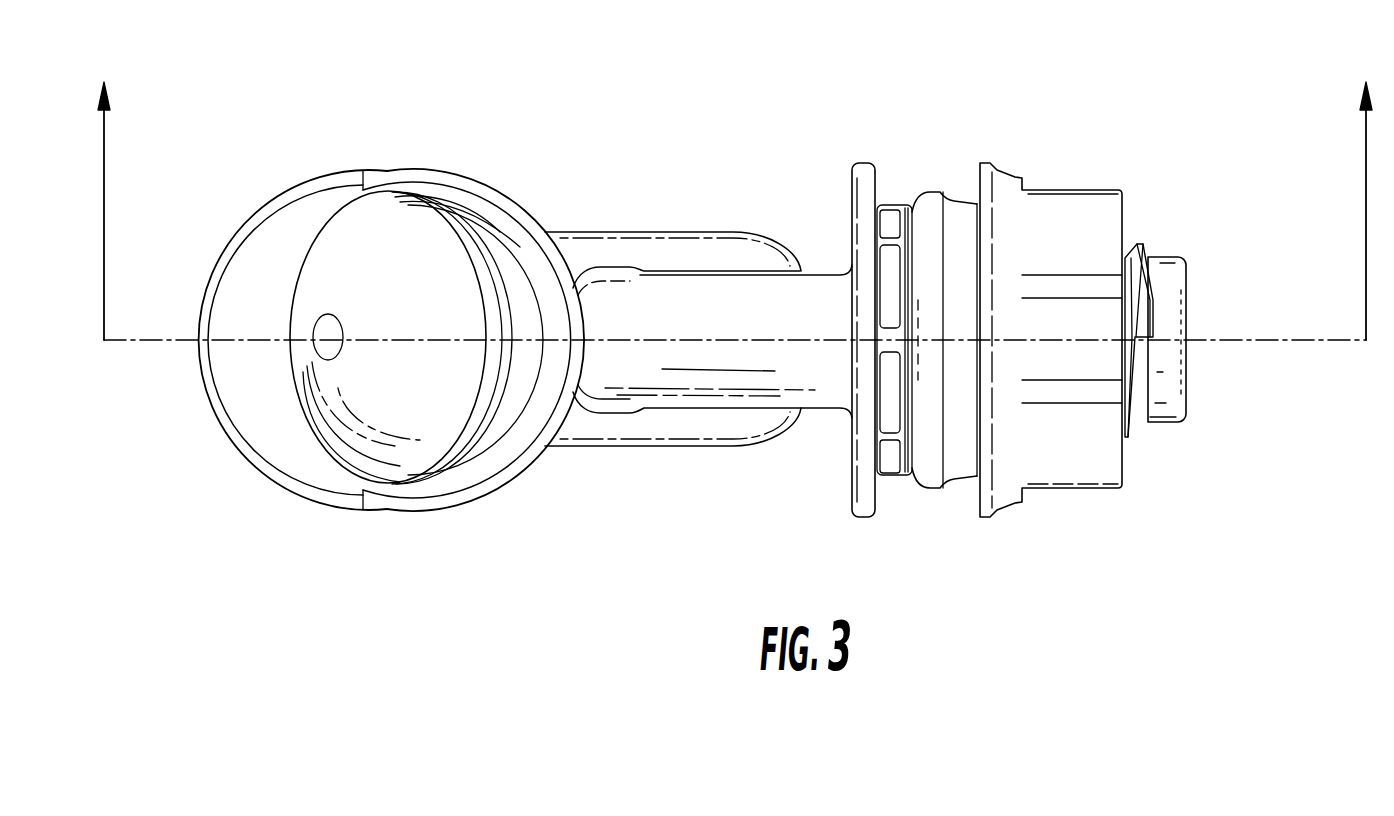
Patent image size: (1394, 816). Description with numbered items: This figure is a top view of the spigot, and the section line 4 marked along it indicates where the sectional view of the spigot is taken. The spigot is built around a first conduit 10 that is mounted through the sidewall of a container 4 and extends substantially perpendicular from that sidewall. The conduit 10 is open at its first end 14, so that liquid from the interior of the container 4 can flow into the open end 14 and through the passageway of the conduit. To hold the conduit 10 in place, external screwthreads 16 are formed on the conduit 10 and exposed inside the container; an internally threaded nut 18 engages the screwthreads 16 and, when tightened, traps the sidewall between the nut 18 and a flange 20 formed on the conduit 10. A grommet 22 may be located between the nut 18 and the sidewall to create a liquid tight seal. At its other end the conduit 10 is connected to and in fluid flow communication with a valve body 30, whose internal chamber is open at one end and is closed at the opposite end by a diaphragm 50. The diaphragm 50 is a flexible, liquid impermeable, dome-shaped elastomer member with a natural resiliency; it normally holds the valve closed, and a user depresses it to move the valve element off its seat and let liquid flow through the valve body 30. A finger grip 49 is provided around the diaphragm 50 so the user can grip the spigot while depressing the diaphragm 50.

The container 4 is at (735, 190).
The first conduit 10 is at (808, 288).
The first end 14 is at (1188, 306).
The external screwthreads 16 is at (1137, 246).
The internally threaded nut 18 is at (1087, 203).
The flange 20 is at (866, 162).
The grommet 22 is at (932, 462).
The valve body 30 is at (627, 230).
The finger grip 49 is at (400, 177).
The diaphragm 50 is at (360, 257).